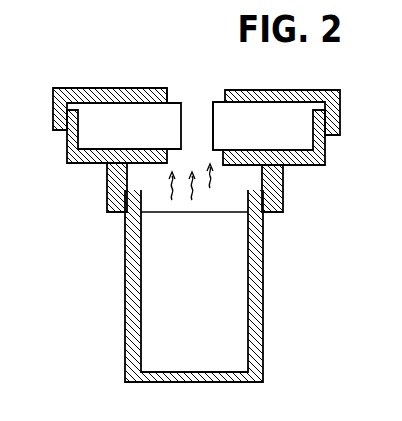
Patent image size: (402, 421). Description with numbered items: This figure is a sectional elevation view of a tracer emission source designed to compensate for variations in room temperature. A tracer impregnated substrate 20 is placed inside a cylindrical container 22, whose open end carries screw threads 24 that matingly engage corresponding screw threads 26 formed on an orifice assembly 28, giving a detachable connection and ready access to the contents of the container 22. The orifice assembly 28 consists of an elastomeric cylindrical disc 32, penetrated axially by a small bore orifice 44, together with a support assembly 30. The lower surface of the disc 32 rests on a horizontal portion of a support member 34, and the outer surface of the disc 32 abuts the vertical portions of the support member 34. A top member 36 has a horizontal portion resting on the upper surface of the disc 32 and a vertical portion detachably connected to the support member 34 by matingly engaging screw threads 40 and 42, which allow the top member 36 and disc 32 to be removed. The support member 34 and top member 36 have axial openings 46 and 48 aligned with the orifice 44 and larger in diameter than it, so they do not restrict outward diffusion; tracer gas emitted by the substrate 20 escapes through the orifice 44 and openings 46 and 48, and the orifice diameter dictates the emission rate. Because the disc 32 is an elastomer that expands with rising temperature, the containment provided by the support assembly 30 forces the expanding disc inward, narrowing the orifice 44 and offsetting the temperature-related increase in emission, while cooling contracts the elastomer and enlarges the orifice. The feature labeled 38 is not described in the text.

The tracer impregnated substrate 20 is at (157, 263).
The cylindrical container 22 is at (255, 302).
The screw threads 24 is at (194, 192).
The screw threads 26 is at (267, 197).
The orifice assembly 28 is at (170, 33).
The support assembly 30 is at (47, 144).
The elastomeric cylindrical disc 32 is at (108, 120).
The support member 34 is at (70, 162).
The top member 36 is at (290, 90).
The left closure stem 38 is at (107, 180).
The screw threads 40 is at (324, 125).
The screw threads 42 is at (328, 125).
The orifice 44 is at (213, 118).
The axial opening 46 is at (168, 157).
The axial opening 48 is at (170, 96).